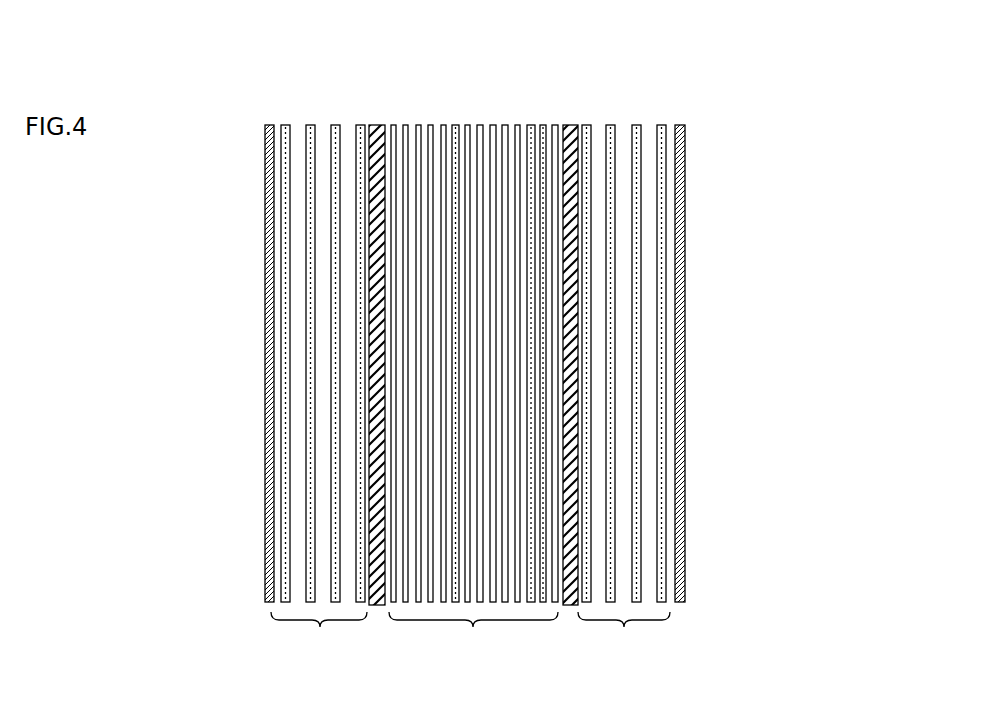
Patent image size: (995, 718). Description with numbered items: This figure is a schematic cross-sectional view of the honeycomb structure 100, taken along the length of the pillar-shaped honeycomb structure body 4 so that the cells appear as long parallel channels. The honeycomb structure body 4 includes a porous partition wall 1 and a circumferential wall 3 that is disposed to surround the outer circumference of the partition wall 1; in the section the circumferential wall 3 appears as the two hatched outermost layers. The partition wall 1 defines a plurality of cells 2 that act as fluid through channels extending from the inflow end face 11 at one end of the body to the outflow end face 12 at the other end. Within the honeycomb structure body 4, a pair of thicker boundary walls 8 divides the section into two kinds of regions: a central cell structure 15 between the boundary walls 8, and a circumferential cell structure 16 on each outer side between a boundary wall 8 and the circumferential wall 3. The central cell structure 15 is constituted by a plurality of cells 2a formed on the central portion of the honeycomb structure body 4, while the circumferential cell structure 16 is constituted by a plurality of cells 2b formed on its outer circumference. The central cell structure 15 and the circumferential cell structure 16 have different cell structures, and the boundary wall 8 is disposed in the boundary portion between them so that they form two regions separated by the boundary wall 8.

The honeycomb structure 100 is at (742, 20).
The honeycomb structure body 4 is at (690, 222).
The circumferential wall 3 is at (267, 312).
The boundary wall 8 is at (375, 451).
The cells 2 is at (473, 330).
The cells of the central cell structure 2a is at (438, 140).
The cells of the circumferential cell structure 2b is at (350, 140).
The partition wall 1 is at (532, 140).
The inflow end face 11 is at (271, 112).
The outflow end face 12 is at (268, 628).
The circumferential cell structure 16 is at (470, 637).
The central cell structure 15 is at (473, 637).